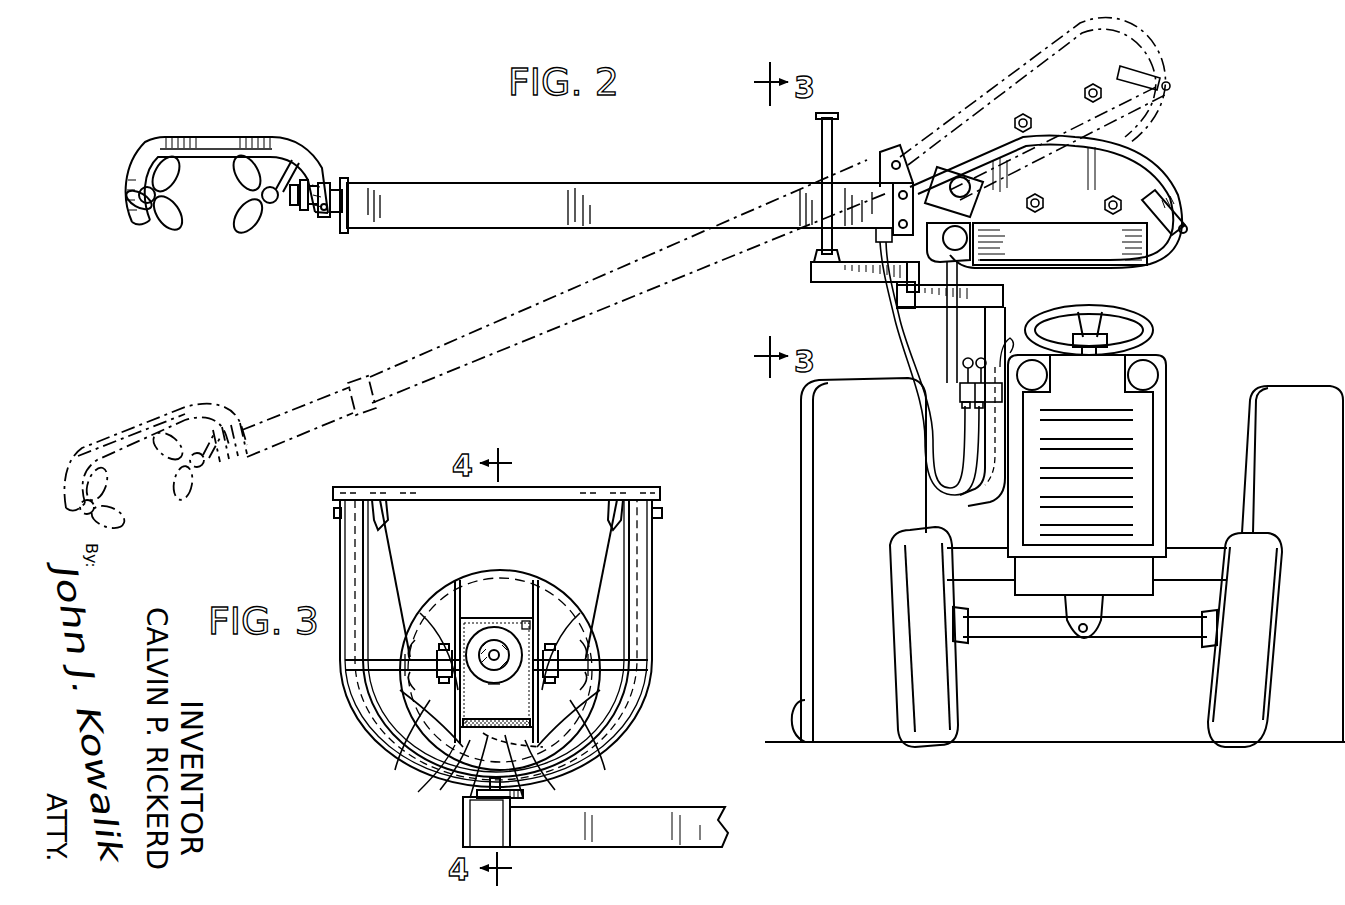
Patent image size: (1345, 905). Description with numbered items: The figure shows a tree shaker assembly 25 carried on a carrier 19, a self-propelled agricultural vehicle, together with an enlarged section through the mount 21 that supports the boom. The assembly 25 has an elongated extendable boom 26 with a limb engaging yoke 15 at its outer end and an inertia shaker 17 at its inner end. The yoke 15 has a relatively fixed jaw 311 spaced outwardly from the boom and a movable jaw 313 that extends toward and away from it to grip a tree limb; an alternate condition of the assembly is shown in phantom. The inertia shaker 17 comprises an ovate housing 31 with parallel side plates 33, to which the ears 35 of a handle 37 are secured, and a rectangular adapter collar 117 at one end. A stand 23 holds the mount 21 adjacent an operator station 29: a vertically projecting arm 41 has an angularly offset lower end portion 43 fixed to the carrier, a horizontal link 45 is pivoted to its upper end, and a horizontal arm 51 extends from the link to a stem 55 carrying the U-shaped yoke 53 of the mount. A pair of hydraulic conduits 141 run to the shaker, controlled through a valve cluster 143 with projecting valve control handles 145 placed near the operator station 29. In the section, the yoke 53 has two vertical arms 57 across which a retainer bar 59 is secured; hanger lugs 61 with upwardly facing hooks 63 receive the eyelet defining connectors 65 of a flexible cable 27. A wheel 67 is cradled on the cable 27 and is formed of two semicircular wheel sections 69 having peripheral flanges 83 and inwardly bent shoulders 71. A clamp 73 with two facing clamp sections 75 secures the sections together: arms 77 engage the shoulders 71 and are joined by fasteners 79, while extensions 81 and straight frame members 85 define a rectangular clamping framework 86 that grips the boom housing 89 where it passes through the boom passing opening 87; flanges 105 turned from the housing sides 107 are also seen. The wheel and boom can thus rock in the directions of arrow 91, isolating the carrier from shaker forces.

In FIG. 2, the limb engaging yoke 15 is at (217, 186).
In FIG. 2, the fixed jaw 311 is at (145, 226).
In FIG. 2, the movable jaw 313 is at (264, 232).
In FIG. 2, the boom 26 is at (507, 193).
In FIG. 2, the tree shaker assembly 25 is at (665, 178).
In FIG. 2, the U-shaped yoke 53 is at (822, 154).
In FIG. 3, the U-shaped yoke 53 is at (608, 763).
In FIG. 2, the mount 21 is at (847, 138).
In FIG. 3, the mount 21 is at (670, 644).
In FIG. 2, the adapter collar 117 is at (931, 197).
In FIG. 2, the inertia shaker 17 is at (1190, 163).
In FIG. 3, the inertia shaker 17 is at (492, 619).
In FIG. 2, the side plates 33 is at (1142, 187).
In FIG. 2, the ovate housing 31 is at (1184, 186).
In FIG. 2, the ears 35 is at (1162, 222).
In FIG. 2, the handle 37 is at (1190, 229).
In FIG. 2, the horizontal arm 51 is at (858, 274).
In FIG. 3, the horizontal arm 51 is at (683, 843).
In FIG. 2, the horizontal link 45 is at (990, 298).
In FIG. 2, the vertically projecting arm 41 is at (1003, 320).
In FIG. 2, the stand 23 is at (905, 306).
In FIG. 2, the hydraulic fluid circulating conduits 141 is at (932, 338).
In FIG. 2, the valve cluster 143 is at (958, 388).
In FIG. 2, the valve control handles 145 is at (1022, 340).
In FIG. 2, the operator station 29 is at (1143, 313).
In FIG. 2, the carrier 19 is at (1170, 420).
In FIG. 2, the lower end portion 43 is at (1000, 488).
In FIG. 3, the retainer bar 59 is at (510, 488).
In FIG. 3, the eyelet defining connectors 65 is at (380, 500).
In FIG. 3, the hanger lugs 61 is at (334, 513).
In FIG. 3, the hooks 63 is at (390, 513).
In FIG. 3, the arms 57 is at (340, 560).
In FIG. 3, the flexible cable 27 is at (607, 555).
In FIG. 3, the arrow 91 is at (520, 557).
In FIG. 3, the peripheral flanges 83 is at (470, 580).
In FIG. 3, the frame member 85 is at (515, 588).
In FIG. 3, the extensions 81 is at (522, 590).
In FIG. 3, the wheel sections 69 is at (420, 603).
In FIG. 3, the wheel 67 is at (557, 592).
In FIG. 3, the fastener 79 is at (420, 625).
In FIG. 3, the clamp arms 77 is at (420, 652).
In FIG. 3, the clamp sections 75 is at (448, 652).
In FIG. 3, the boom housing 89 is at (524, 626).
In FIG. 3, the shoulders 71 is at (362, 665).
In FIG. 3, the boom passing opening 87 is at (488, 676).
In FIG. 3, the sides of boom housing 107 is at (530, 708).
In FIG. 3, the clamp 73 is at (546, 699).
In FIG. 3, the rectangular clamping framework 86 is at (420, 758).
In FIG. 3, the flanges 105 is at (457, 737).
In FIG. 3, the stem 55 is at (478, 812).